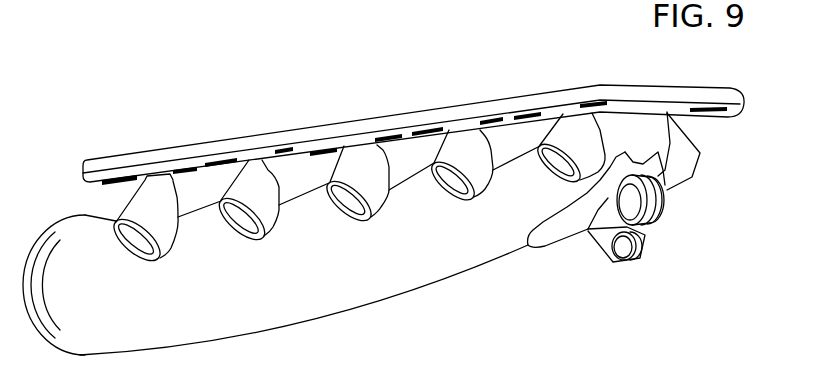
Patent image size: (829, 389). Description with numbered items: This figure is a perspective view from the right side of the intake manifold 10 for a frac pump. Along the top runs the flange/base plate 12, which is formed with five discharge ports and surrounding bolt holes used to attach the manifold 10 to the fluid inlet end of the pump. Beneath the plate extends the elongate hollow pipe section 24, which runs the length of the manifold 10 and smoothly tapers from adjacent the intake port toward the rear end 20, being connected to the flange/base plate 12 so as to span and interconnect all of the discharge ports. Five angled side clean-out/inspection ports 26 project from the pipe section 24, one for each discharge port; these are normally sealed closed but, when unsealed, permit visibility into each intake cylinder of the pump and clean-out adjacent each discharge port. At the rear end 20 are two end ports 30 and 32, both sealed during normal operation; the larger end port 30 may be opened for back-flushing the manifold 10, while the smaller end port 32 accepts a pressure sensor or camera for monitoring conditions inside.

The intake manifold 10 is at (257, 307).
The flange/base plate 12 is at (193, 147).
The rear end 20 is at (635, 132).
The elongate hollow pipe section 24 is at (455, 258).
The side clean-out/inspection ports 26 is at (258, 191).
The end port 30 is at (660, 202).
The end port 32 is at (636, 248).